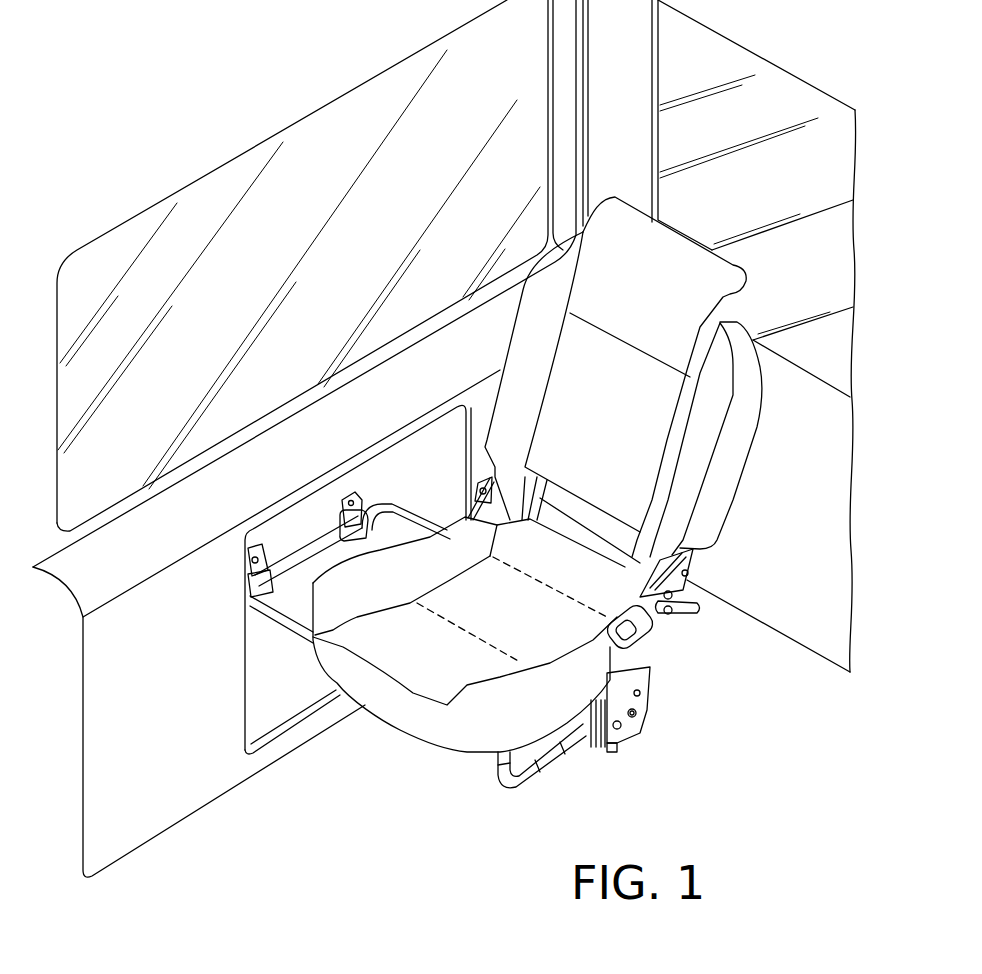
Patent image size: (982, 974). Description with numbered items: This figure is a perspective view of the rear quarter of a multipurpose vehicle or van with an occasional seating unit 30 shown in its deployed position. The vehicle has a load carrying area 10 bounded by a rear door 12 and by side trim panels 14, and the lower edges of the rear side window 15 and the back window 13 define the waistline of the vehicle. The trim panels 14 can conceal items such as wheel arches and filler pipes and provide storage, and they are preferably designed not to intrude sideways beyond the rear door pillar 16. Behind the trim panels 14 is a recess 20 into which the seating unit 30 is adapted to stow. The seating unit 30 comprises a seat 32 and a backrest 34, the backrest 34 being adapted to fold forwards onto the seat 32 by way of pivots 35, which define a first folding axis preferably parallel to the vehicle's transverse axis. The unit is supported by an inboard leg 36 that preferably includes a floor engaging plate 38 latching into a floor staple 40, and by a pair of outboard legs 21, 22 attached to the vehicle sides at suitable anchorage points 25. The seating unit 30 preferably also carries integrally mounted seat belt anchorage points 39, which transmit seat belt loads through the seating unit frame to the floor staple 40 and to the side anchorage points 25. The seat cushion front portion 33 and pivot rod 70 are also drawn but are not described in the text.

The load carrying area 10 is at (608, 815).
The rear door 12 is at (802, 499).
The back window 13 is at (776, 185).
The side trim panels 14 is at (180, 683).
The rear side window 15 is at (333, 295).
The rear door pillar 16 is at (630, 81).
The recess 20 is at (435, 481).
The outboard leg 21 is at (286, 623).
The outboard leg 22 is at (423, 525).
The anchorage points 25 is at (347, 495).
The occasional seating unit 30 is at (360, 765).
The seat 32 is at (499, 622).
The seat cushion front portion 33 is at (412, 716).
The backrest 34 is at (656, 304).
The pivots 35 is at (493, 503).
The inboard leg 36 is at (510, 785).
The floor engaging plate 38 is at (633, 725).
The seat belt anchorage points 39 is at (640, 627).
The floor staple 40 is at (610, 745).
The pivot rod 70 is at (293, 557).